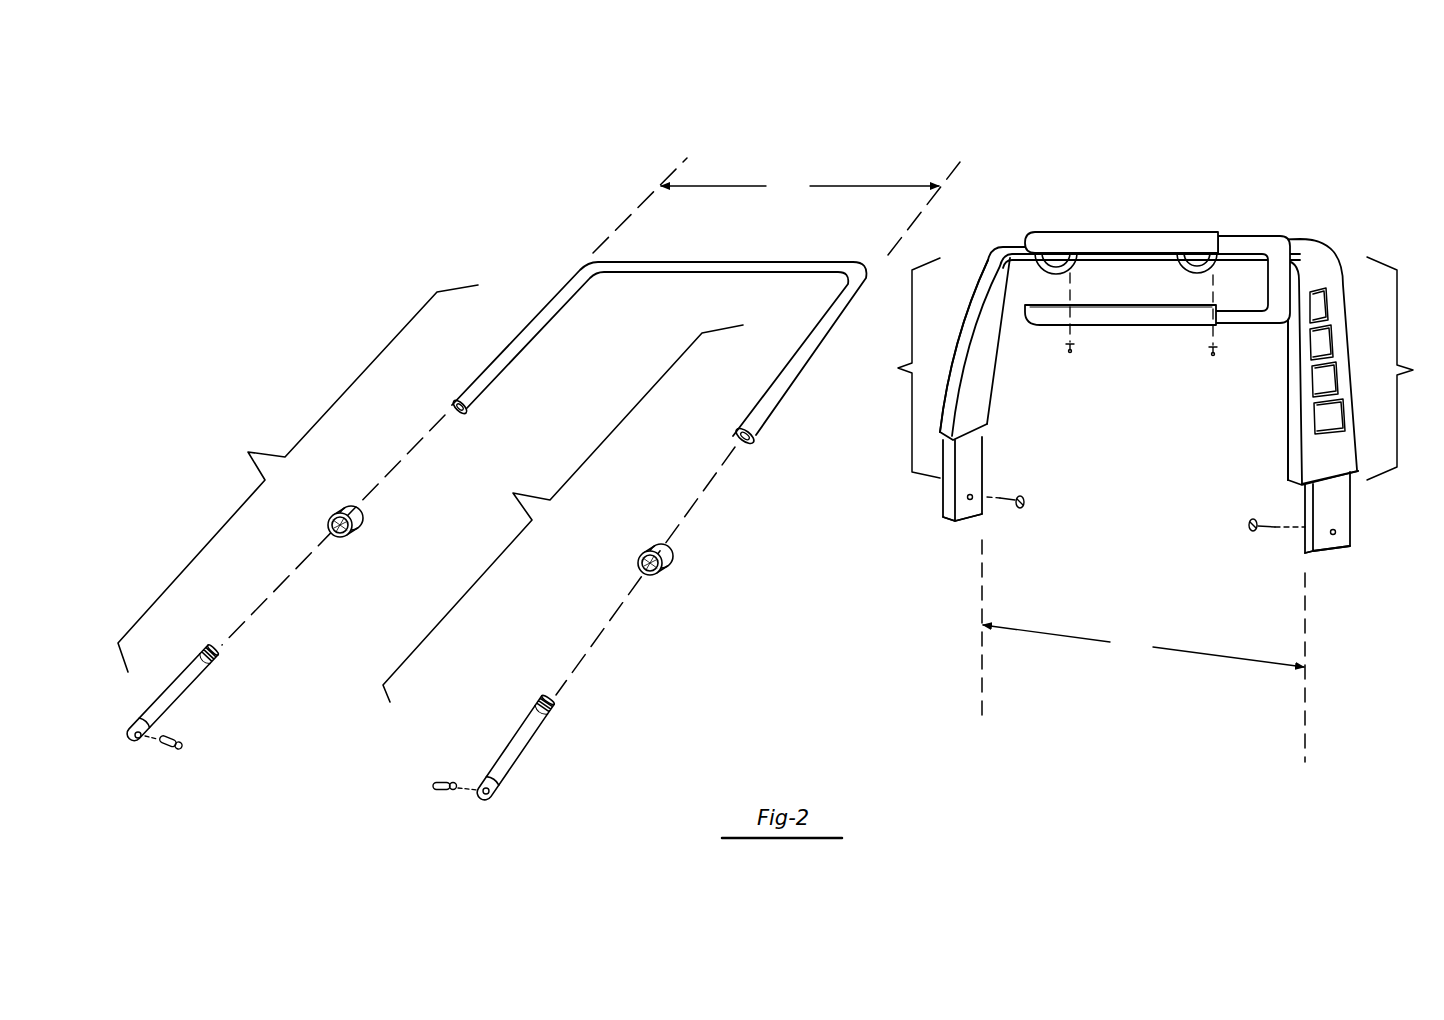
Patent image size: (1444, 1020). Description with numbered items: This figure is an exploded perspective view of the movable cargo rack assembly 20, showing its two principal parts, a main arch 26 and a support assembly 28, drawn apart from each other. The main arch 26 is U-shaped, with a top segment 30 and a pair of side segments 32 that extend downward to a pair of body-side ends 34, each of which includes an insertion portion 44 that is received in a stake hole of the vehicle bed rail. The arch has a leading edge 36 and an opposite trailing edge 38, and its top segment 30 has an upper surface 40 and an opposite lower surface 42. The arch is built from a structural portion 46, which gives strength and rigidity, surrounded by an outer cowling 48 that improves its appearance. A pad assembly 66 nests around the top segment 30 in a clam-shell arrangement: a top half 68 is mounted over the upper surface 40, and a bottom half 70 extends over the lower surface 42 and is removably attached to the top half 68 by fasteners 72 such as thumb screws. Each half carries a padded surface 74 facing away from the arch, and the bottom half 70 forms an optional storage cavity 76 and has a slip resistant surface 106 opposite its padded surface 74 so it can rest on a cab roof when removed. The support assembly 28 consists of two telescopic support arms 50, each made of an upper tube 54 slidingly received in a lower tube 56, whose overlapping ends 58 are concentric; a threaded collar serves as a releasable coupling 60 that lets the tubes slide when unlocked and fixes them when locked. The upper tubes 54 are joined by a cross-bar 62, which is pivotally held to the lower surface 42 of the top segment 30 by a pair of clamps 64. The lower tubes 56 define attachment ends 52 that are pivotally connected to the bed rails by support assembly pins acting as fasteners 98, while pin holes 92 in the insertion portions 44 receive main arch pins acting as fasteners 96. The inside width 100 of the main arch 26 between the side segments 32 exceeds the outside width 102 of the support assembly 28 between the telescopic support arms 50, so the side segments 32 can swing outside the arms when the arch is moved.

The movable cargo rack assembly 20 is at (366, 206).
The main arch 26 is at (1130, 176).
The support assembly 28 is at (648, 680).
The top segment 30 is at (1278, 238).
The side segments 32 is at (1153, 368).
The body-side ends 34 is at (965, 523).
The leading edge 36 is at (1328, 257).
The trailing edge 38 is at (1285, 415).
The upper surface 40 is at (1010, 243).
The lower surface 42 is at (1237, 260).
The insertion portion 44 is at (953, 497).
The structural portion 46 is at (972, 390).
The outer cowling 48 is at (1320, 470).
The telescopic support arms 50 is at (430, 493).
The attachment ends 52 is at (140, 722).
The upper tube 54 is at (533, 318).
The lower tube 56 is at (187, 682).
The overlapping ends 58 is at (459, 414).
The releasable coupling (collar) 60 is at (355, 511).
The cross-bar 62 is at (715, 267).
The clamps 64 is at (1058, 274).
The pad assembly 66 is at (1104, 192).
The top half 68 is at (1212, 249).
The bottom half 70 is at (1118, 317).
The fasteners 72 is at (1070, 354).
The padded surface 74 is at (1147, 231).
The storage cavity 76 is at (1256, 304).
The pin holes 92 is at (974, 496).
The fasteners (main arch pins) 96 is at (1028, 503).
The fasteners (support assembly pins) 98 is at (167, 750).
The inside width 100 is at (1143, 651).
The outside width 102 is at (776, 206).
The slip resistant surface 106 is at (1127, 292).